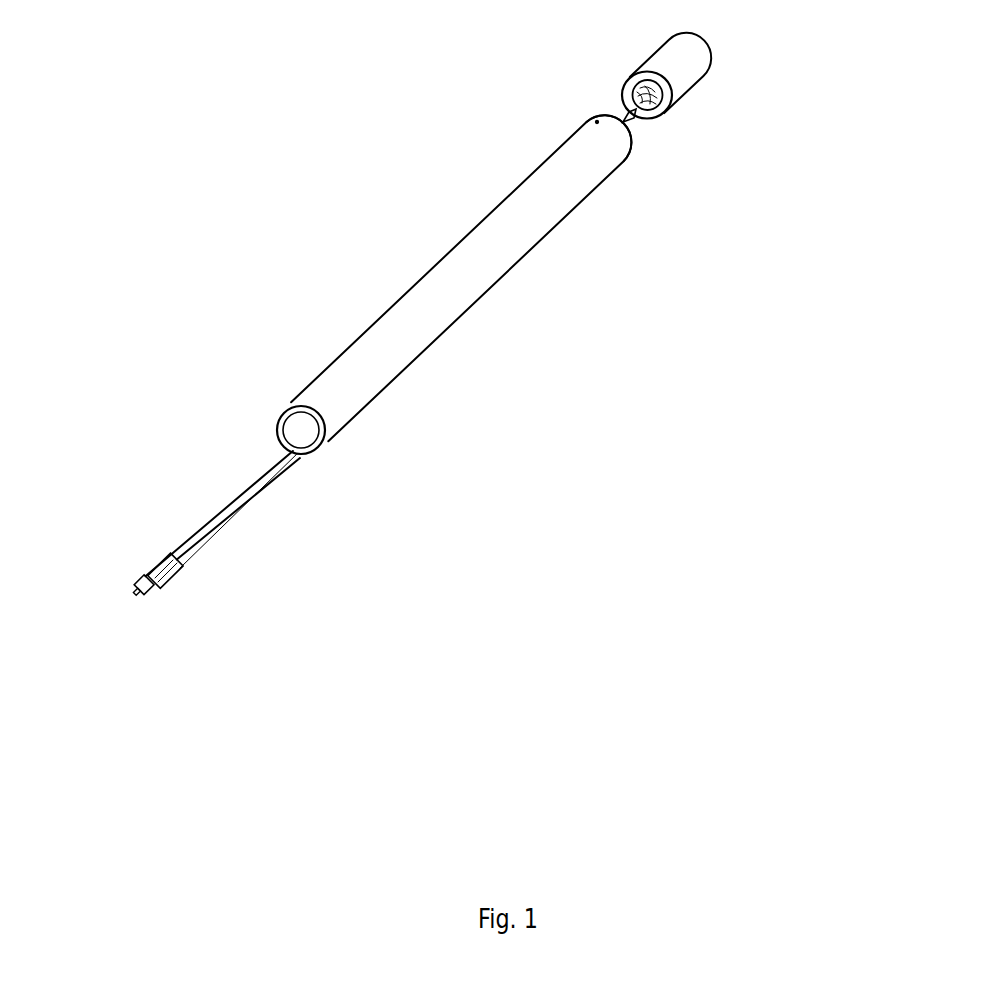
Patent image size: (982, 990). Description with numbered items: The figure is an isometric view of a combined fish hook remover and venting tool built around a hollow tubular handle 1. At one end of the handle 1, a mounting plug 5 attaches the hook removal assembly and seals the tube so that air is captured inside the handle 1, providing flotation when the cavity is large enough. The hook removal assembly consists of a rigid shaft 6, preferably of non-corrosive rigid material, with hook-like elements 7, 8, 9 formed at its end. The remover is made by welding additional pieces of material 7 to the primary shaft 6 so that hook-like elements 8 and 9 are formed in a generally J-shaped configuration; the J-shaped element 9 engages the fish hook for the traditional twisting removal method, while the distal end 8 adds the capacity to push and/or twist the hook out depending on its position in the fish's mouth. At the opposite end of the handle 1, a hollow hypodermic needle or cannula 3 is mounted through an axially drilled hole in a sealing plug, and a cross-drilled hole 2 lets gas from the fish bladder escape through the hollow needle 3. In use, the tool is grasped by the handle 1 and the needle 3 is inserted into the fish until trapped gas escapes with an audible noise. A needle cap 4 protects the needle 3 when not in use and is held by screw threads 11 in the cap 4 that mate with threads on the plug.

The handle 1 is at (420, 323).
The cross-drilled hole 2 is at (595, 120).
The hollow hypodermic needle 3 is at (633, 123).
The needle cap 4 is at (678, 60).
The mounting plug 5 is at (317, 443).
The rigid shaft 6 is at (198, 528).
The hook-like element 7 is at (137, 597).
The distal end hook-like element 8 is at (155, 593).
The J-shaped hook-like element 9 is at (173, 578).
The screw threads 11 is at (670, 105).